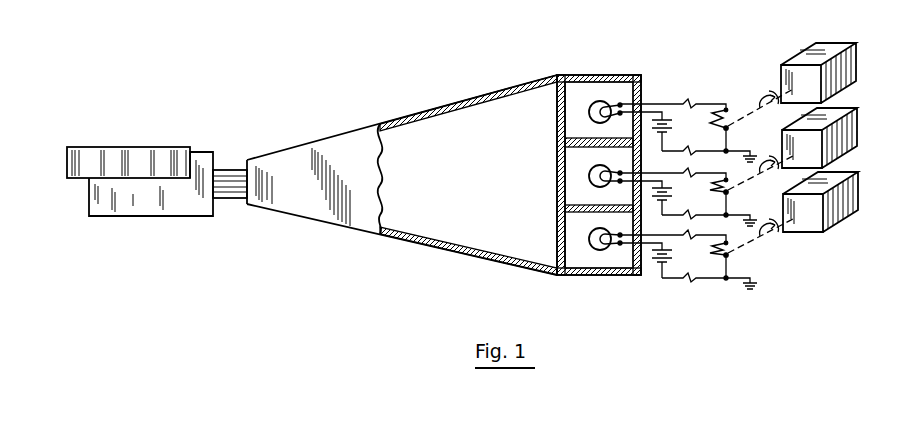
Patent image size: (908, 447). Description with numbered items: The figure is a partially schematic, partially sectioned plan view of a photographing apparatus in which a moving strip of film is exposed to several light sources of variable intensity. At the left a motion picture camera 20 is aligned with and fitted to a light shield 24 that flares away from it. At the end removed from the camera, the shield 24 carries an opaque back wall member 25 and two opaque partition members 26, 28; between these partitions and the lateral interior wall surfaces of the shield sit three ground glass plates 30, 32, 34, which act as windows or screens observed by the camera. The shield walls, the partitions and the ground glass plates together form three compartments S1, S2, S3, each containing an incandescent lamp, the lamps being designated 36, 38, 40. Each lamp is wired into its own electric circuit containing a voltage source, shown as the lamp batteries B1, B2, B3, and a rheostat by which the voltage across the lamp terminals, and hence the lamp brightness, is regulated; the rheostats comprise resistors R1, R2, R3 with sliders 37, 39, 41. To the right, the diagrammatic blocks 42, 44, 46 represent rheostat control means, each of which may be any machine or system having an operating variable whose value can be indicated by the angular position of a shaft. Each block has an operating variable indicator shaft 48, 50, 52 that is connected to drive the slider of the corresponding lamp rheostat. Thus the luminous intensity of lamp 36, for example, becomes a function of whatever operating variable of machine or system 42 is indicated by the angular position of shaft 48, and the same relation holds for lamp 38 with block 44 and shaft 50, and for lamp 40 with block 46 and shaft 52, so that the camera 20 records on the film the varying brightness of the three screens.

The motion picture camera 20 is at (207, 151).
The light shield 24 is at (438, 109).
The opaque back wall member 25 is at (645, 77).
The opaque partition member 26 is at (610, 116).
The opaque partition member 28 is at (612, 214).
The ground glass plate 30 is at (557, 116).
The ground glass plate 32 is at (557, 183).
The ground glass plate 34 is at (557, 233).
The incandescent lamp 36 is at (590, 112).
The incandescent lamp 38 is at (592, 175).
The incandescent lamp 40 is at (592, 241).
The slider 37 is at (730, 128).
The slider 39 is at (730, 193).
The slider 41 is at (730, 256).
The rheostat control means 42 is at (857, 51).
The rheostat control means 44 is at (863, 123).
The rheostat control means 46 is at (864, 188).
The operating variable indicator shaft 48 is at (778, 90).
The operating variable indicator shaft 50 is at (778, 156).
The operating variable indicator shaft 52 is at (788, 224).
The compartment S1 is at (578, 126).
The compartment S2 is at (578, 193).
The compartment S3 is at (578, 256).
The lamp battery B1 is at (668, 121).
The lamp battery B2 is at (668, 189).
The lamp battery B3 is at (668, 251).
The resistor R1 is at (722, 109).
The resistor R2 is at (724, 179).
The resistor R3 is at (724, 279).